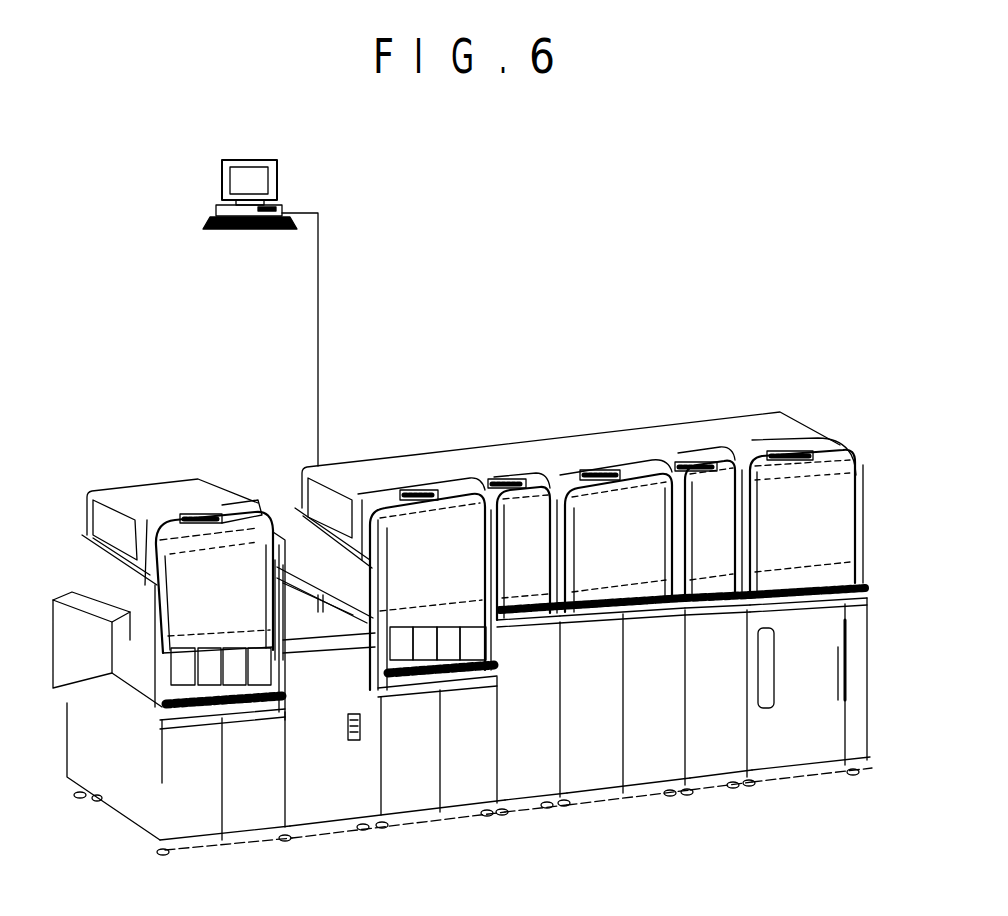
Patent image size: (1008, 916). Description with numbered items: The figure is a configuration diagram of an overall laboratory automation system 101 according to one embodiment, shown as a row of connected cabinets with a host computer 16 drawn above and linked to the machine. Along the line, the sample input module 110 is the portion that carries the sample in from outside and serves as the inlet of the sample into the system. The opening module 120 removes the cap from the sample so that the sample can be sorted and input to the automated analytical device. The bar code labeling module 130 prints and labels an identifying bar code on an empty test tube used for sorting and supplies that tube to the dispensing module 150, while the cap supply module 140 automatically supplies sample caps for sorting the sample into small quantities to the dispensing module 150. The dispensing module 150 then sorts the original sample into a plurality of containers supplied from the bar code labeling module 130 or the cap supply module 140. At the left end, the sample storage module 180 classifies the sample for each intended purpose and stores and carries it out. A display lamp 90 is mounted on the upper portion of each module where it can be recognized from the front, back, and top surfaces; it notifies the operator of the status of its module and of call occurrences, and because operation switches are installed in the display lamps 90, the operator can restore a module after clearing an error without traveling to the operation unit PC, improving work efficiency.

The host computer 16 is at (278, 176).
The laboratory automation system 101 is at (549, 340).
The display lamp 90 is at (212, 512).
The sample input module 110 is at (412, 822).
The opening module 120 is at (532, 810).
The bar code labeling module 130 is at (622, 798).
The cap supply module 140 is at (712, 795).
The dispensing module 150 is at (817, 775).
The sample storage module 180 is at (221, 840).